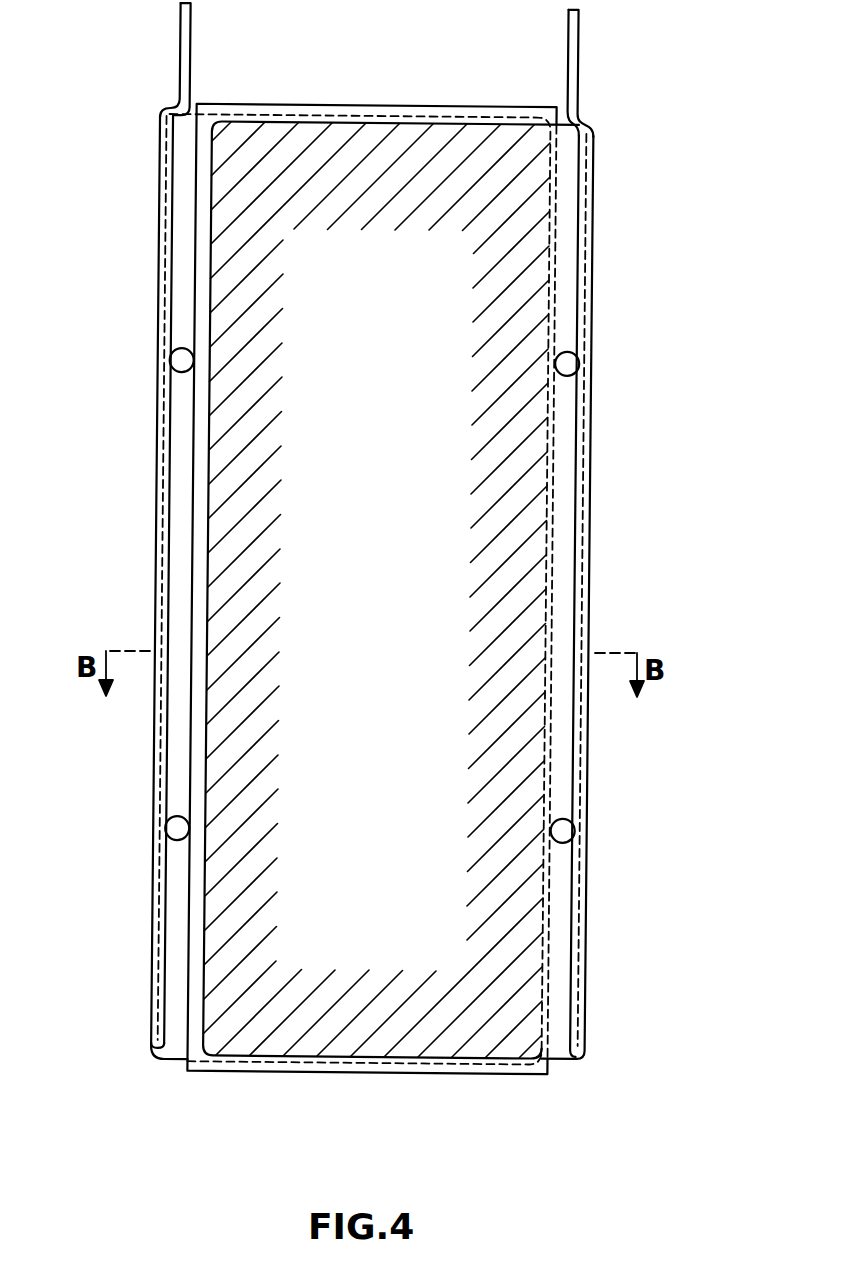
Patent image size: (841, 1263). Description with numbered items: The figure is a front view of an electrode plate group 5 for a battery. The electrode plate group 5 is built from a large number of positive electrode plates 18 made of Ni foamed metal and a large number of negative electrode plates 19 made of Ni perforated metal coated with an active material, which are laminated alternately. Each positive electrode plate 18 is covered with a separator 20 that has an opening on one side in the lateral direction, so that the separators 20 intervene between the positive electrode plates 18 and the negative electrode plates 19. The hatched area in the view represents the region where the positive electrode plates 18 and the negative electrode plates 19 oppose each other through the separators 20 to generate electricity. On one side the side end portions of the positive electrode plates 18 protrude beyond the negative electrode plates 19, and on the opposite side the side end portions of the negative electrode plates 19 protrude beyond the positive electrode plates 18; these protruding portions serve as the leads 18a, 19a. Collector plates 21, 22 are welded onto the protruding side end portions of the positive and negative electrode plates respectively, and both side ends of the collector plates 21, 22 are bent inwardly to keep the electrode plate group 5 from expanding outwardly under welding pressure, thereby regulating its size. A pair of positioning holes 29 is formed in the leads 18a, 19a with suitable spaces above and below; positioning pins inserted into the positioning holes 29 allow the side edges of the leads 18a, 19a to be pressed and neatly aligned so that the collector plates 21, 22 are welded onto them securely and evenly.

The electrode plate group 5 is at (657, 80).
The positive electrode plate 18 is at (258, 116).
The lead 18a is at (173, 470).
The negative electrode plate 19 is at (422, 116).
The lead 19a is at (571, 471).
The separator 20 is at (196, 408).
The collector plate 21 is at (157, 764).
The collector plate 22 is at (585, 766).
The positioning hole 29 is at (170, 360).